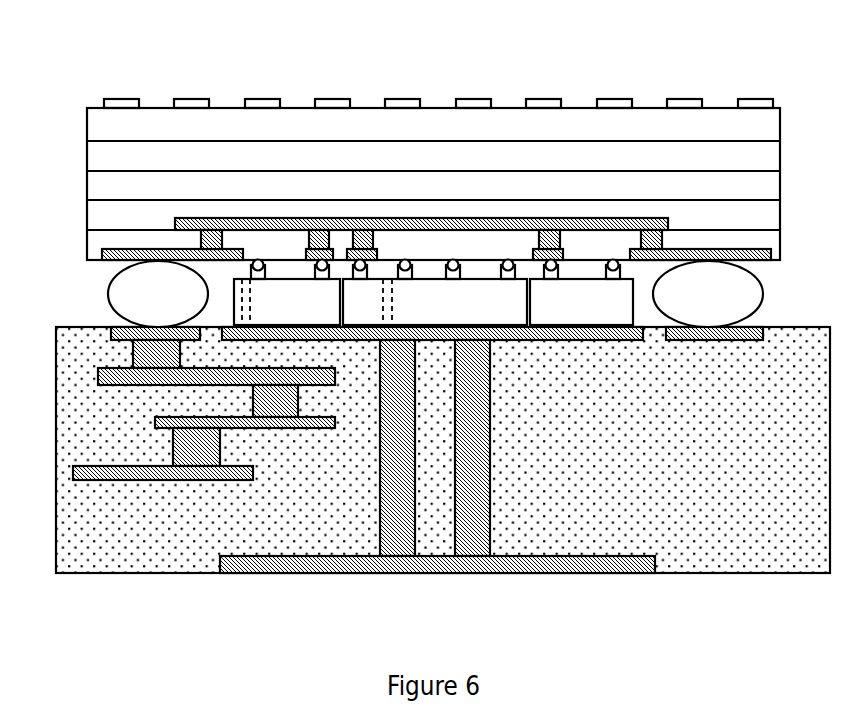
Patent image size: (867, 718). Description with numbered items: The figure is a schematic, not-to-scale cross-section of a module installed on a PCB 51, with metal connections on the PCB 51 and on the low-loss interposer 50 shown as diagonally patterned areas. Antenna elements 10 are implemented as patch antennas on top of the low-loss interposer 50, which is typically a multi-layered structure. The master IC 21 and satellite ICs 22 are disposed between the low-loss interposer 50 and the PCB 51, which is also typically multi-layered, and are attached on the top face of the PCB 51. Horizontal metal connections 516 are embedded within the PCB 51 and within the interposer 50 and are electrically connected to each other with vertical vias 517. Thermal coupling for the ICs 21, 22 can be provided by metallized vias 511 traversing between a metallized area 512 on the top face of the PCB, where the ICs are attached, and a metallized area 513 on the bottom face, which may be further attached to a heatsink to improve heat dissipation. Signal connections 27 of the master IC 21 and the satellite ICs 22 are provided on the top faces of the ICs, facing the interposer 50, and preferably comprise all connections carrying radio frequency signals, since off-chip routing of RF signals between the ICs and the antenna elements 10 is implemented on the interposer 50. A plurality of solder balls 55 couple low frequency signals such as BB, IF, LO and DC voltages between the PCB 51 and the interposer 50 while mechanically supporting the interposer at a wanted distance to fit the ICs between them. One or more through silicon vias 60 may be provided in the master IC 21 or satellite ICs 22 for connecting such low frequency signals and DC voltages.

The antenna elements 10 is at (330, 104).
The master IC 21 is at (467, 307).
The satellite ICs 22 is at (283, 307).
The signal connections 27 is at (322, 242).
The low-loss interposer 50 is at (95, 132).
The PCB 51 is at (86, 335).
The solder balls 55 is at (133, 297).
The through silicon vias 60 is at (237, 299).
The metallized vias 511 is at (480, 370).
The metallized area 512 is at (530, 337).
The metallized area 513 is at (530, 567).
The horizontal metal connections 516 is at (74, 475).
The vertical vias 517 is at (173, 457).